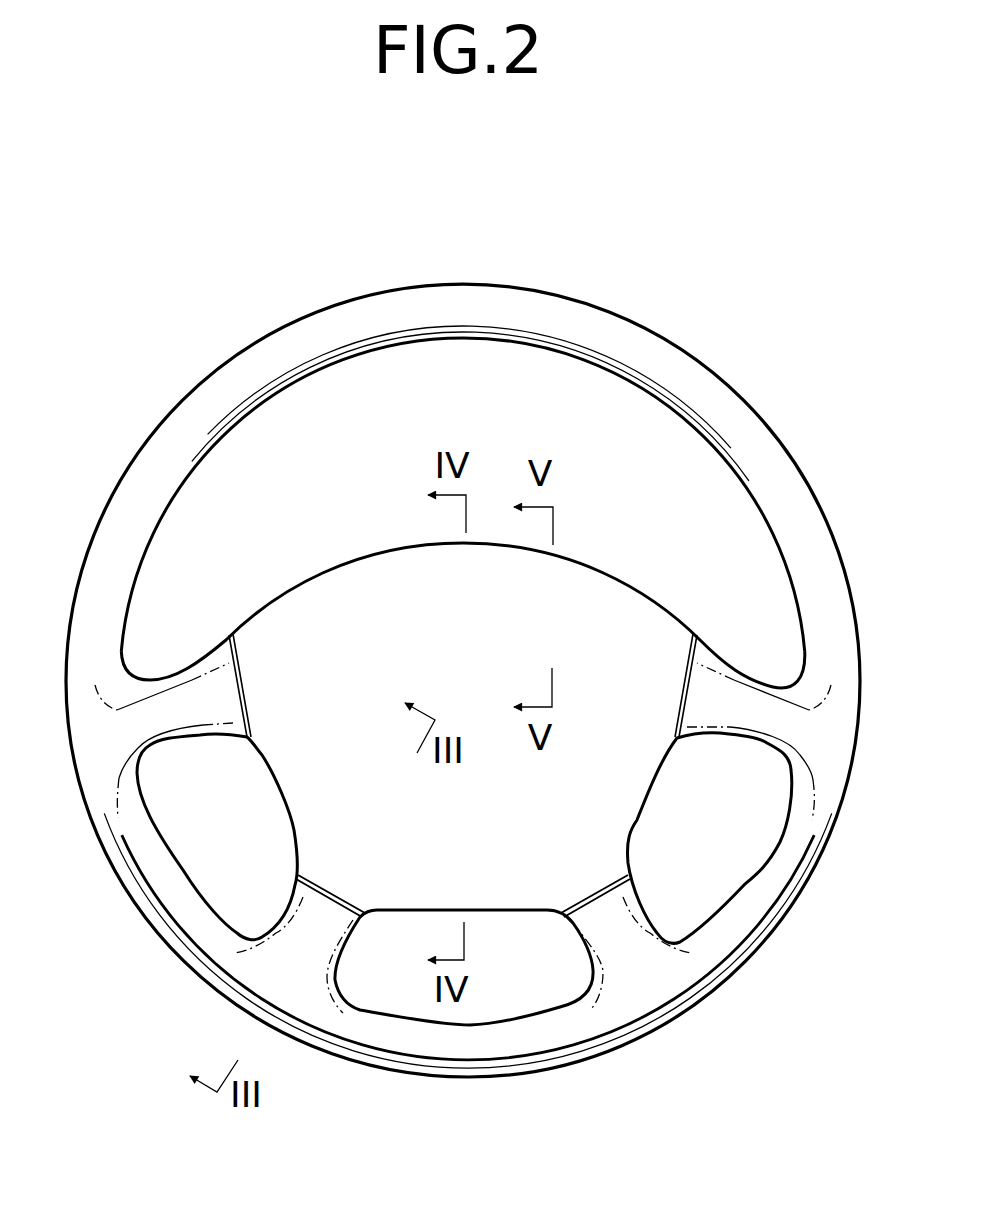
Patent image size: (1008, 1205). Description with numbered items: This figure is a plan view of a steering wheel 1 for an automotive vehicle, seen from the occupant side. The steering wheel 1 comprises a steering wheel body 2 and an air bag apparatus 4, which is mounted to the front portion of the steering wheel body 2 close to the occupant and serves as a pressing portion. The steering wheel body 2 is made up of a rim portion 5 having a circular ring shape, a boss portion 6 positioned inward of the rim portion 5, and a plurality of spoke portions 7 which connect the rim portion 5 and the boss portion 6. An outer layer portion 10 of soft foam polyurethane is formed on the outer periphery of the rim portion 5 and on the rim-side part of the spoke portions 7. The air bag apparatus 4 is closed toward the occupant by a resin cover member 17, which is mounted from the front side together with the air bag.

The steering wheel 1 is at (724, 305).
The steering wheel body 2 is at (757, 407).
The air bag apparatus 4 is at (343, 594).
The rim portion 5 is at (780, 480).
The boss portion 6 is at (662, 607).
The spoke portions 7 is at (169, 663).
The outer layer portion 10 is at (822, 540).
The cover member 17 is at (595, 587).